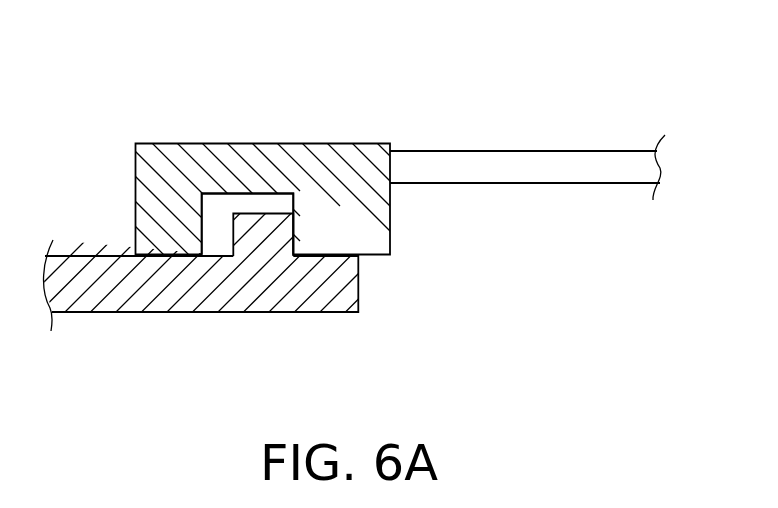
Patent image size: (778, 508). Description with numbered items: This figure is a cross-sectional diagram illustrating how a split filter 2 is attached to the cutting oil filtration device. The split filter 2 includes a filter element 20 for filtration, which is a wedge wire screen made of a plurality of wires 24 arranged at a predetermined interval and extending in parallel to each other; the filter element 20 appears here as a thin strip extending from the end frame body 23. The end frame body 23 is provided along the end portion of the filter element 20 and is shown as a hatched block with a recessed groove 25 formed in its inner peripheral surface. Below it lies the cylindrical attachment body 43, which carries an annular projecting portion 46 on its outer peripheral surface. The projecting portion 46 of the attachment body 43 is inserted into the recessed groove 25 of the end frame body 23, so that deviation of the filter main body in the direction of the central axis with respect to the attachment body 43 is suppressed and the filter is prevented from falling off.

The split filter 2 is at (452, 127).
The filter element 20 is at (543, 151).
The end frame body 23 is at (313, 143).
The wire 24 is at (620, 158).
The recessed groove 25 is at (242, 193).
The attachment body 43 is at (82, 313).
The projecting portion 46 is at (238, 227).